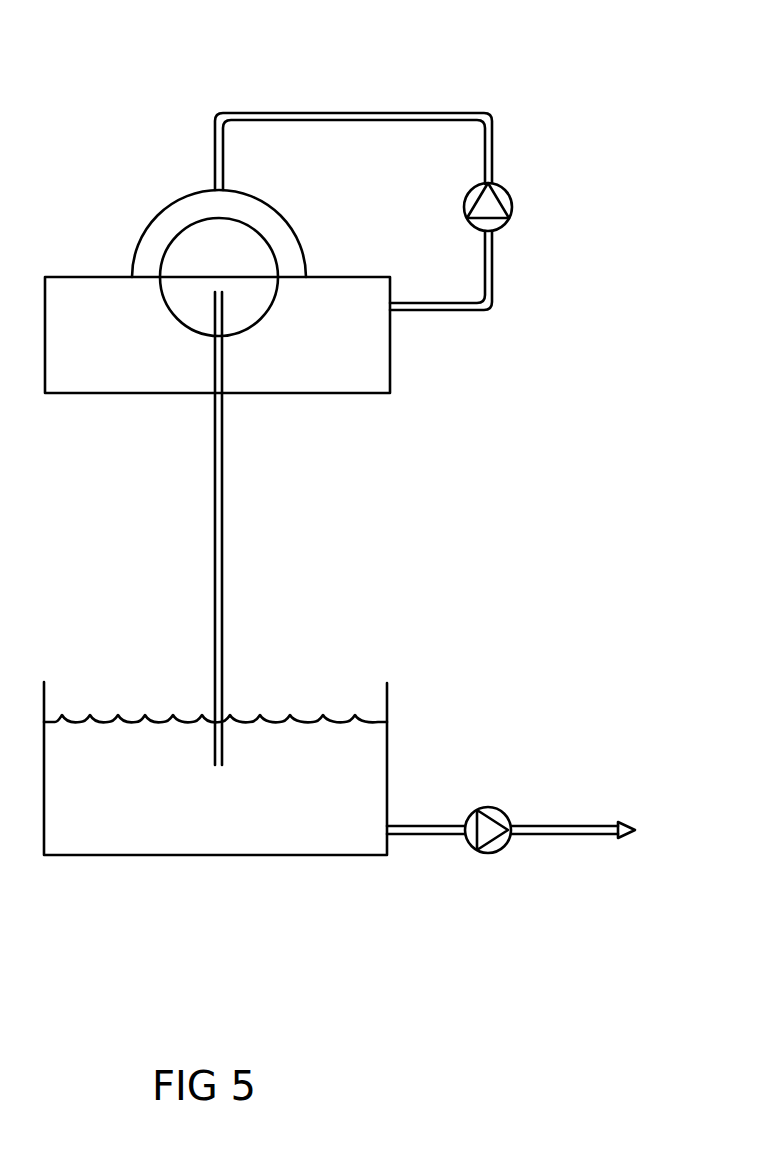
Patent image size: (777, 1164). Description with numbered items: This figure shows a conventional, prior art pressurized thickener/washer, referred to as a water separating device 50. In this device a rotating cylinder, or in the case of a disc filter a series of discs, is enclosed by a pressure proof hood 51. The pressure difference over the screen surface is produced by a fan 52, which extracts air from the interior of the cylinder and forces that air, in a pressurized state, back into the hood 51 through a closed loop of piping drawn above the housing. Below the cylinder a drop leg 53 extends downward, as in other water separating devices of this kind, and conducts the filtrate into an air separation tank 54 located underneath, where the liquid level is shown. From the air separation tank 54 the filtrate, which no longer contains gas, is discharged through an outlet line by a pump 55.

The water separating device 50 is at (352, 105).
The pressure proof hood 51 is at (160, 230).
The fan 52 is at (512, 205).
The drop leg 53 is at (214, 513).
The air separation tank 54 is at (112, 820).
The pump 55 is at (482, 855).